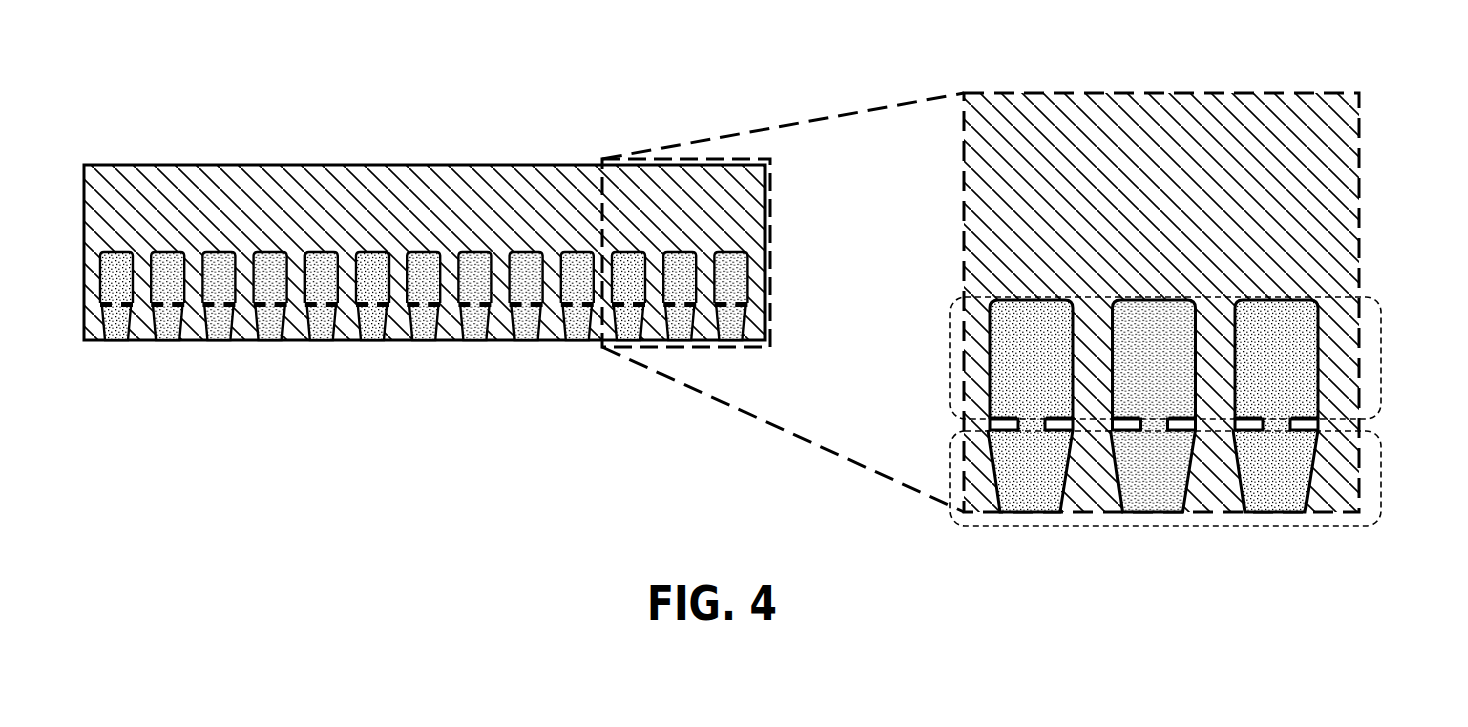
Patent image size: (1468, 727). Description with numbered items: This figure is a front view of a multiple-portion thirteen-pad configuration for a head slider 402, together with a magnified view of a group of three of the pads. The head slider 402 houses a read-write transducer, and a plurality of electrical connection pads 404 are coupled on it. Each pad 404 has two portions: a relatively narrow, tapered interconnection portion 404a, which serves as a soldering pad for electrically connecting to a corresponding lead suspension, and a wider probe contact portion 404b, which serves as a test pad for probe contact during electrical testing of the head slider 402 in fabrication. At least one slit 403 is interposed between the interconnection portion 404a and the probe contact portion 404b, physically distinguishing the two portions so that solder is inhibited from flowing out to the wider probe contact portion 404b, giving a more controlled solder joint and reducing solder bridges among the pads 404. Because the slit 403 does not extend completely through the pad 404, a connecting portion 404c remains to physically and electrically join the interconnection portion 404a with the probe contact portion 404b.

The head slider 402 is at (174, 183).
The slit 403 is at (755, 302).
The electrical connection pads 404 is at (774, 445).
The interconnection portion 404a is at (1003, 588).
The probe contact portion 404b is at (1382, 333).
The connecting portion 404c is at (1026, 428).